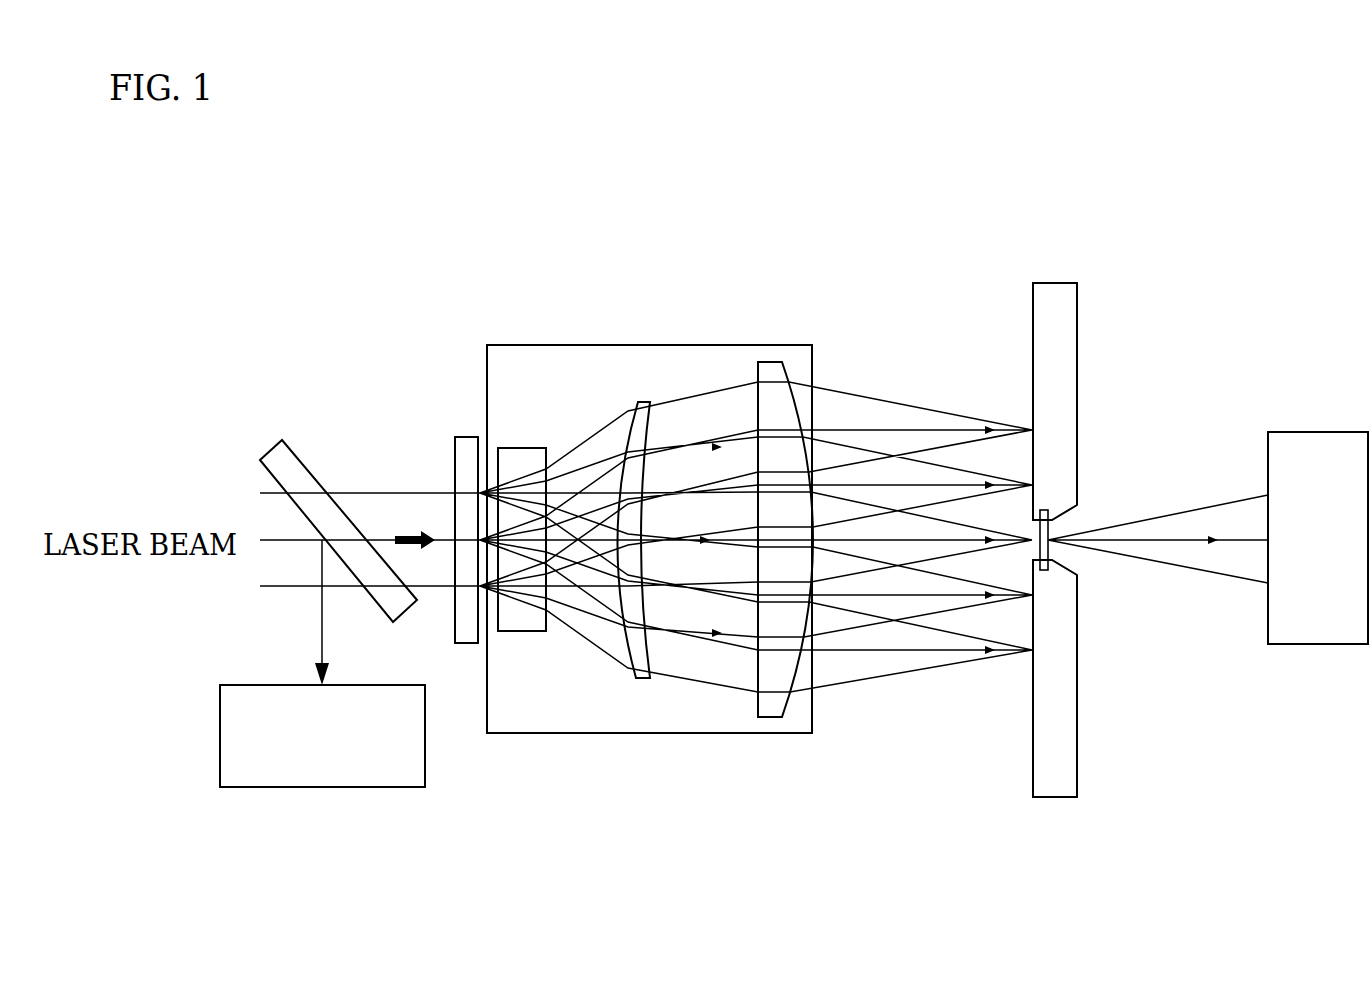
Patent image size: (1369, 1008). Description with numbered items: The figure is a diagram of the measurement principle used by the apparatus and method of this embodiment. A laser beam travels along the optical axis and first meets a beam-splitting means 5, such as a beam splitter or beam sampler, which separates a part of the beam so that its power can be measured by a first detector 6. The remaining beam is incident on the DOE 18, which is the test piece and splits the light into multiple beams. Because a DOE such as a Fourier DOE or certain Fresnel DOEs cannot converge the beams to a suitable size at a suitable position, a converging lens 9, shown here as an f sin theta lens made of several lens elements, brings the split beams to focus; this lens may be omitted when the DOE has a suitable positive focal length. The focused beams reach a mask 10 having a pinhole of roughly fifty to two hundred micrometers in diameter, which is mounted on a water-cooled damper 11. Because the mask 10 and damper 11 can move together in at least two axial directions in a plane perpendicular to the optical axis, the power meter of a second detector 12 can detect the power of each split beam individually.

The beam-splitting means 5 is at (300, 478).
The first detector 6 is at (322, 736).
The converging lens 9 is at (737, 367).
The mask 10 is at (1050, 506).
The water-cooled damper 11 is at (1063, 757).
The second detector 12 is at (1318, 538).
The DOE 18 is at (462, 435).